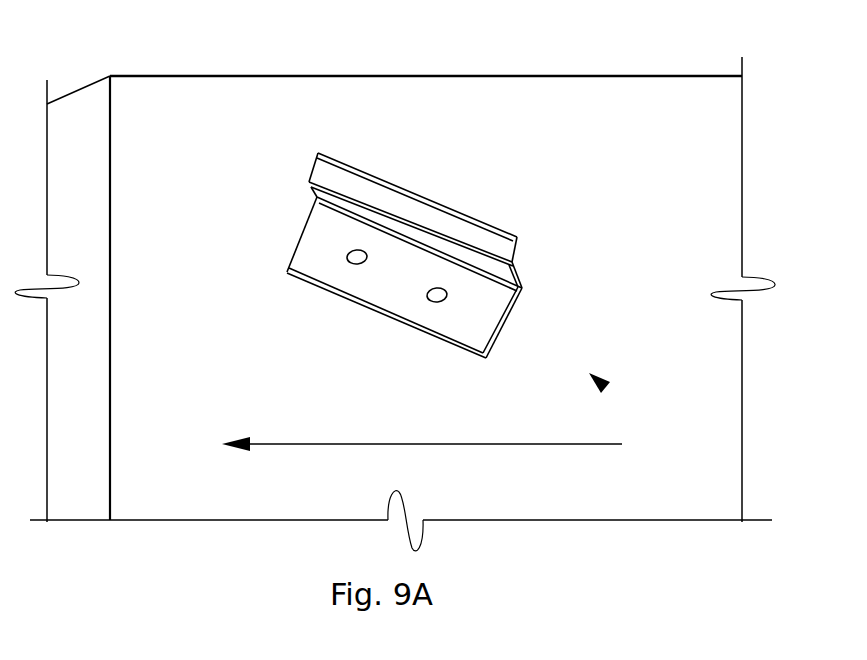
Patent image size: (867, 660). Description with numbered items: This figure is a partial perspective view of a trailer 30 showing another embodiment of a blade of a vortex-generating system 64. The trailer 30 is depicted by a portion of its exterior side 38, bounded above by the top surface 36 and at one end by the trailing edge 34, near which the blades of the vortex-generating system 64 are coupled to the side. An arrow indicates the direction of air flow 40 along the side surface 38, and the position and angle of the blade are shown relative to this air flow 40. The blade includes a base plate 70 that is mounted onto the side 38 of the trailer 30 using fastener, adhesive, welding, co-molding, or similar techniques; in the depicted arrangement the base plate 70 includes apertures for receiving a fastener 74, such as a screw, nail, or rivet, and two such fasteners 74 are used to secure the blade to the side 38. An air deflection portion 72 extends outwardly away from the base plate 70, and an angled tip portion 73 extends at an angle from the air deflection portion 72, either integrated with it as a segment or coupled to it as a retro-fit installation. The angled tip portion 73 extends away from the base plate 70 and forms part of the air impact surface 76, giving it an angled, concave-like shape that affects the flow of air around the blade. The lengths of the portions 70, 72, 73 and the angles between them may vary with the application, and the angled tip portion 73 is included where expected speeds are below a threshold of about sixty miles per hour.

The trailer 30 is at (395, 284).
The trailing edge 34 is at (92, 358).
The top surface 36 is at (260, 76).
The exterior side 38 is at (533, 504).
The direction of air flow 40 is at (298, 444).
The vortex-generating system 64 is at (605, 388).
The base plate 70 is at (387, 267).
The air deflection portion 72 is at (315, 195).
The angled tip portion 73 is at (417, 210).
The fastener 74 is at (347, 257).
The air impact surface 76 is at (543, 269).